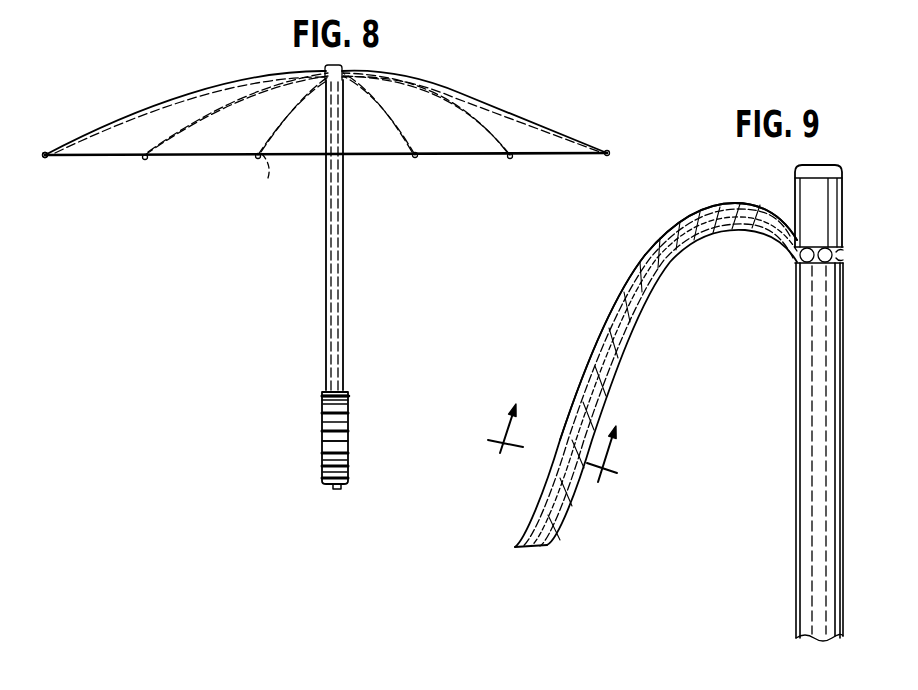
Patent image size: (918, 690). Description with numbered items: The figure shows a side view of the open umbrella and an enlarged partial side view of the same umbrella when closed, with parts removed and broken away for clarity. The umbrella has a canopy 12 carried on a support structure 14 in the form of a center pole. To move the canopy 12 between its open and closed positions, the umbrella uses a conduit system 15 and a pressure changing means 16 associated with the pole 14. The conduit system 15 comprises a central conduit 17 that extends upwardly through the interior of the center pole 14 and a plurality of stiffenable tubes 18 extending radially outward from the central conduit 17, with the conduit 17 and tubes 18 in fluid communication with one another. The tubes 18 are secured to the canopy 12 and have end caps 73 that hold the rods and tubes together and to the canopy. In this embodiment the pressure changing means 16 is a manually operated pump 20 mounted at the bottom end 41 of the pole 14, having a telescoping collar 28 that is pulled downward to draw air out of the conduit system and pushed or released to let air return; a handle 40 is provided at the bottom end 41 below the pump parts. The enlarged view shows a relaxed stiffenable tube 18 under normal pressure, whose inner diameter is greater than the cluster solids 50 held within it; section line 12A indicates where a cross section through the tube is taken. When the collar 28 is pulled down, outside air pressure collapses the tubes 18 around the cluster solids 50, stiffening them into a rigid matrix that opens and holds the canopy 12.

In FIG. 8, the canopy 12 is at (548, 120).
In FIG. 9, the canopy 12 is at (716, 204).
In FIG. 8, the support structure 14 is at (343, 240).
In FIG. 9, the support structure 14 is at (805, 393).
In FIG. 8, the conduit system 15 is at (327, 187).
In FIG. 8, the pressure changing means 16 is at (345, 420).
In FIG. 8, the central conduit 17 is at (331, 298).
In FIG. 9, the central conduit 17 is at (810, 463).
In FIG. 8, the stiffenable tubes 18 is at (195, 125).
In FIG. 9, the stiffenable tubes 18 is at (670, 260).
In FIG. 8, the pump 20 is at (350, 395).
In FIG. 8, the collar 28 is at (320, 412).
In FIG. 8, the handle 40 is at (352, 453).
In FIG. 8, the bottom end 41 is at (338, 486).
In FIG. 9, the cluster solids 50 is at (590, 323).
In FIG. 8, the end caps 73 is at (47, 157).
In FIG. 9, the section line 12A is at (545, 467).